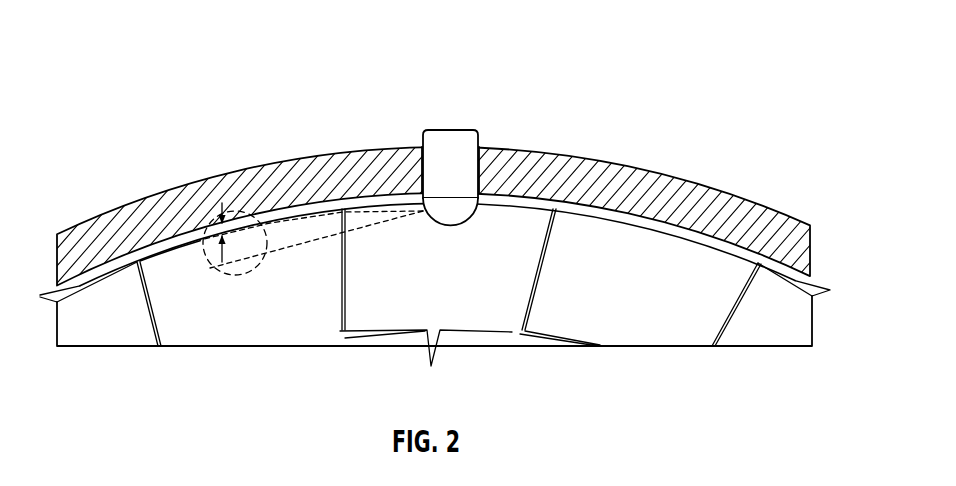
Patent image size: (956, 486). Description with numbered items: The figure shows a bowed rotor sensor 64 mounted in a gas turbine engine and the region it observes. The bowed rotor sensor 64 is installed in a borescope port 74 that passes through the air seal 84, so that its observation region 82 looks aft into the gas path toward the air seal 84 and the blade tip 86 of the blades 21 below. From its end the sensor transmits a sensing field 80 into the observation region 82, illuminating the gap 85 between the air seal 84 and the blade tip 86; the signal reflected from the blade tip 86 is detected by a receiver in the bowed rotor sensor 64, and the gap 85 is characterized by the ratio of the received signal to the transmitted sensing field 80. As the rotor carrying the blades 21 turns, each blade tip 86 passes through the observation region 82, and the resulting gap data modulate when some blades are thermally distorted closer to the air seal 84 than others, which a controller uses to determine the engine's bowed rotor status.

The blades 21 is at (648, 331).
The bowed rotor sensor 64 is at (463, 170).
The borescope port 74 is at (419, 140).
The sensing field 80 is at (306, 242).
The observation region 82 is at (238, 206).
The air seal 84 is at (688, 187).
The gap 85 is at (222, 203).
The blade tip 86 is at (183, 236).